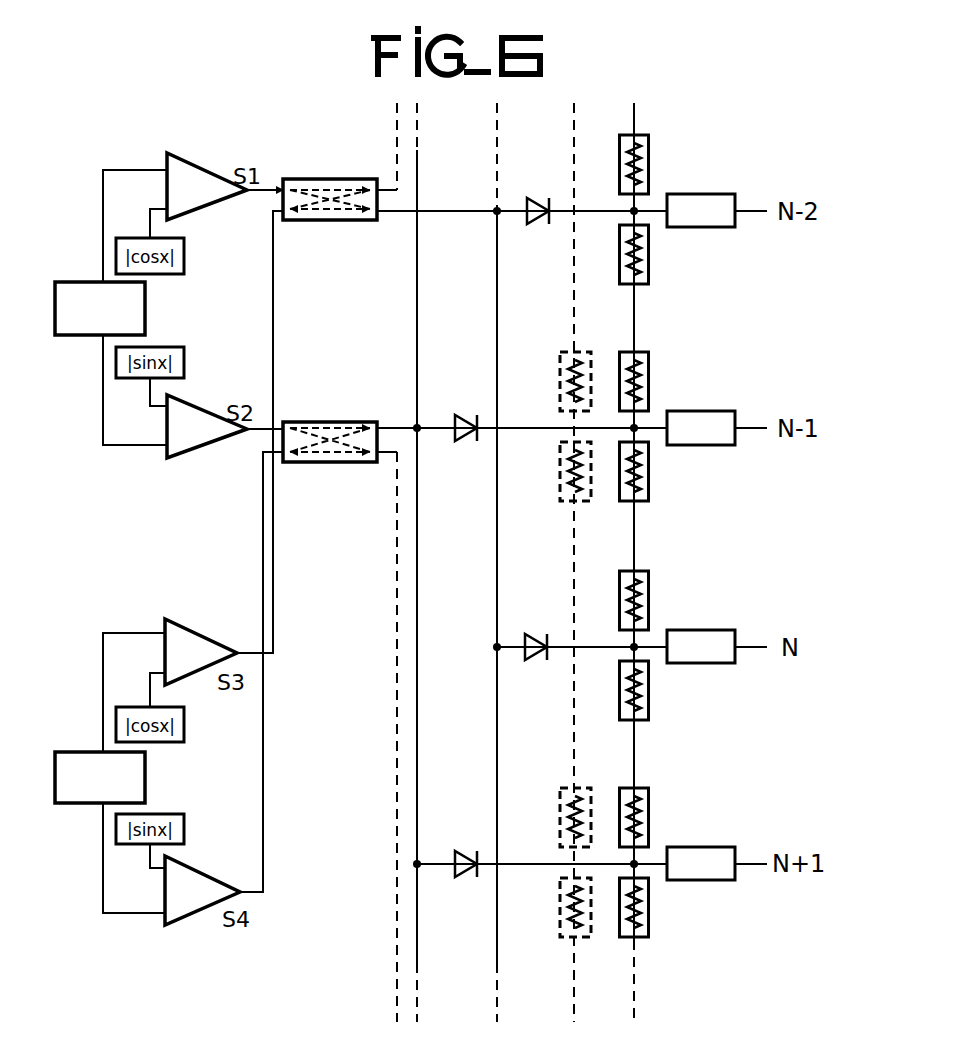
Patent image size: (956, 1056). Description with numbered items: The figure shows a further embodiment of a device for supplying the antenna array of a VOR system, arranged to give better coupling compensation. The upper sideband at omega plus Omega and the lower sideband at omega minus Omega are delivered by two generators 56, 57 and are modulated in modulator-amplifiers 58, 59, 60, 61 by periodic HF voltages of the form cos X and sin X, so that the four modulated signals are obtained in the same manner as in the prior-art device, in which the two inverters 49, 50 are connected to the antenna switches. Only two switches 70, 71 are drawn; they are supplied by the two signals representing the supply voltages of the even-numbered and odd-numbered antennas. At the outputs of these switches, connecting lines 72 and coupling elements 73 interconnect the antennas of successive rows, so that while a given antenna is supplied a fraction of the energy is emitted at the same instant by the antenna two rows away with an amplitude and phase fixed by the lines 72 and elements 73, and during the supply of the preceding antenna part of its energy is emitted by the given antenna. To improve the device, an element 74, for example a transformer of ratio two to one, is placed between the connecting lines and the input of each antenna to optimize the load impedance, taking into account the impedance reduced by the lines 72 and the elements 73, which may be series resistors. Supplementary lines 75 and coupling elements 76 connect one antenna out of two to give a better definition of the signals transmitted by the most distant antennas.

The inverter 49 is at (343, 160).
The inverter 50 is at (344, 405).
The generator 56 is at (86, 254).
The generator 57 is at (86, 727).
The modulator-amplifier 58 is at (212, 172).
The modulator-amplifier 59 is at (205, 446).
The modulator-amplifier 60 is at (212, 640).
The modulator-amplifier 61 is at (203, 909).
The switch 70 is at (497, 966).
The switch 71 is at (420, 948).
The connecting line 72 is at (636, 545).
The coupling element 73 is at (649, 602).
The element 74 is at (701, 847).
The supplementary line 75 is at (573, 728).
The coupling element 76 is at (560, 810).